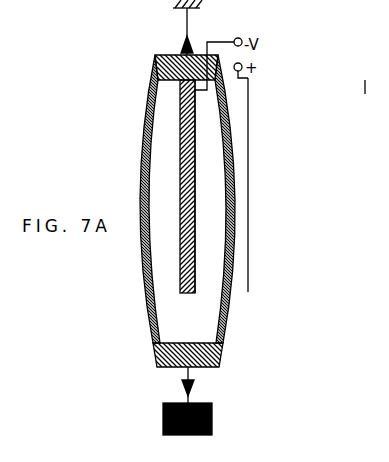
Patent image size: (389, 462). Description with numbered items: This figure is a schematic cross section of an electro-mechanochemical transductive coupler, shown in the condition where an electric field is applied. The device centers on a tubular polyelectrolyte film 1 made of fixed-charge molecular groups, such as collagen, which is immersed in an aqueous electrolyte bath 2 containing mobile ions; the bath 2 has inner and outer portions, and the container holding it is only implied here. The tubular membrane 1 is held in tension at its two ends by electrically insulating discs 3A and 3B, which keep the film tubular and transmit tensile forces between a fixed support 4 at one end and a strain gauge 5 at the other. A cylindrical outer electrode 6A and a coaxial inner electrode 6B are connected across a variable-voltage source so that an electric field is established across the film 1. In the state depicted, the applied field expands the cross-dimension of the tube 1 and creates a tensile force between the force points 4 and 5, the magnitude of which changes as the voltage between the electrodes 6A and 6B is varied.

The tubular polyelectrolyte film 1 is at (148, 120).
The aqueous electrolyte bath 2 is at (196, 320).
The electrically insulating disc 3A is at (229, 344).
The electrically insulating disc 3B is at (157, 55).
The fixed support 4 is at (208, 27).
The strain gauge 5 is at (212, 428).
The cylindrical outer electrode 6A is at (249, 196).
The cylindrical coaxial inner electrode 6B is at (196, 173).